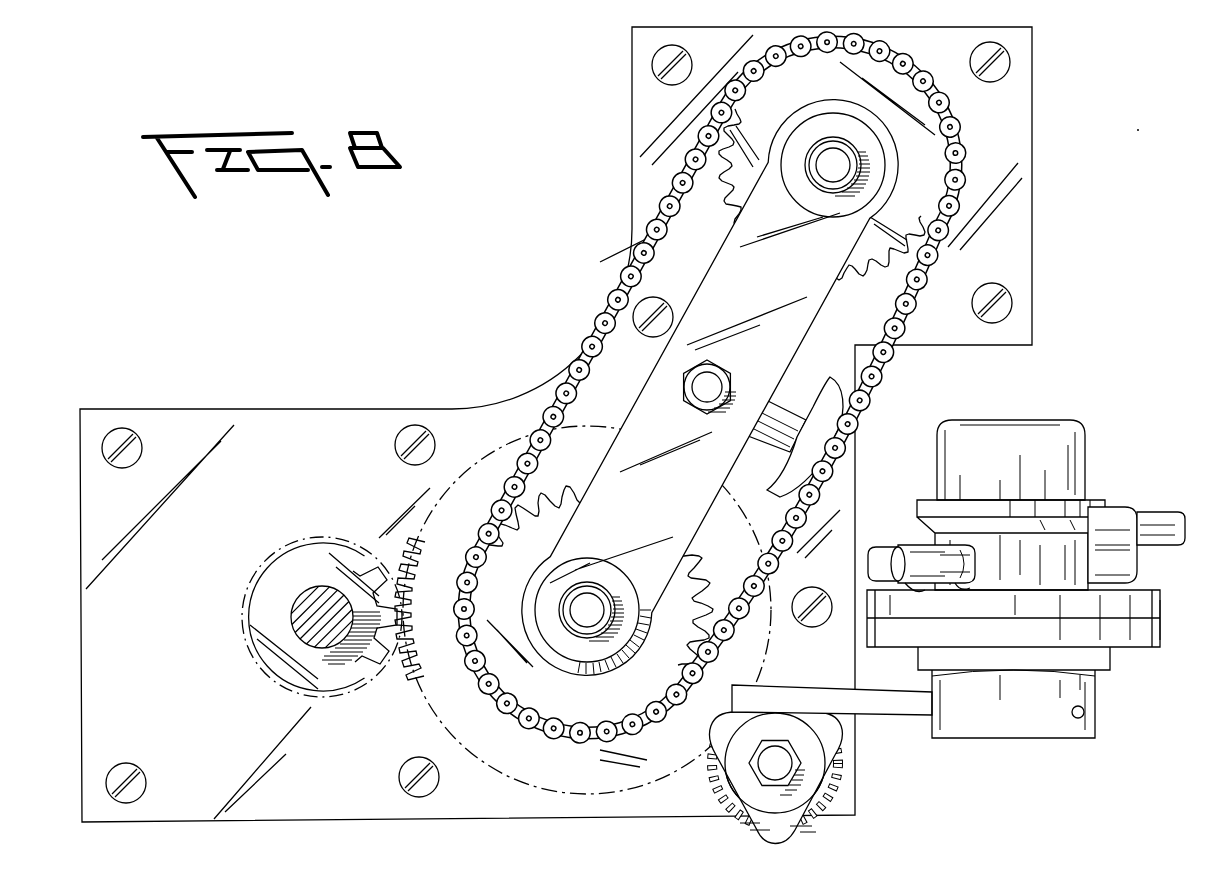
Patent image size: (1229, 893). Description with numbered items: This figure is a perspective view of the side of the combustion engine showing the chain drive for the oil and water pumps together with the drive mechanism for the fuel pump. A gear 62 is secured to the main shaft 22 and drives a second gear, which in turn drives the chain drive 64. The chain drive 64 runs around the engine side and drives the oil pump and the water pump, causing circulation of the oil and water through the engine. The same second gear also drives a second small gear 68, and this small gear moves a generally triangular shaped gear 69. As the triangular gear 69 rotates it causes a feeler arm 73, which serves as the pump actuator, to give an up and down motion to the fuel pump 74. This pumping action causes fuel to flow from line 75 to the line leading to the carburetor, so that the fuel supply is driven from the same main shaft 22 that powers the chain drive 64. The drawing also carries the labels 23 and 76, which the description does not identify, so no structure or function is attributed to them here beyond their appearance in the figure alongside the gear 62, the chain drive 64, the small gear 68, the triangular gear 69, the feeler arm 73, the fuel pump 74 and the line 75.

The main shaft 22 is at (307, 614).
The drive gear 23 is at (418, 702).
The gear 62 is at (311, 556).
The chain drive 64 is at (560, 392).
The second small gear 68 is at (840, 783).
The generally triangular shaped gear 69 is at (837, 733).
The feeler arm 73 is at (792, 683).
The fuel pump 74 is at (1062, 410).
The line 75 is at (1167, 517).
The inlet fitting 76 is at (887, 553).